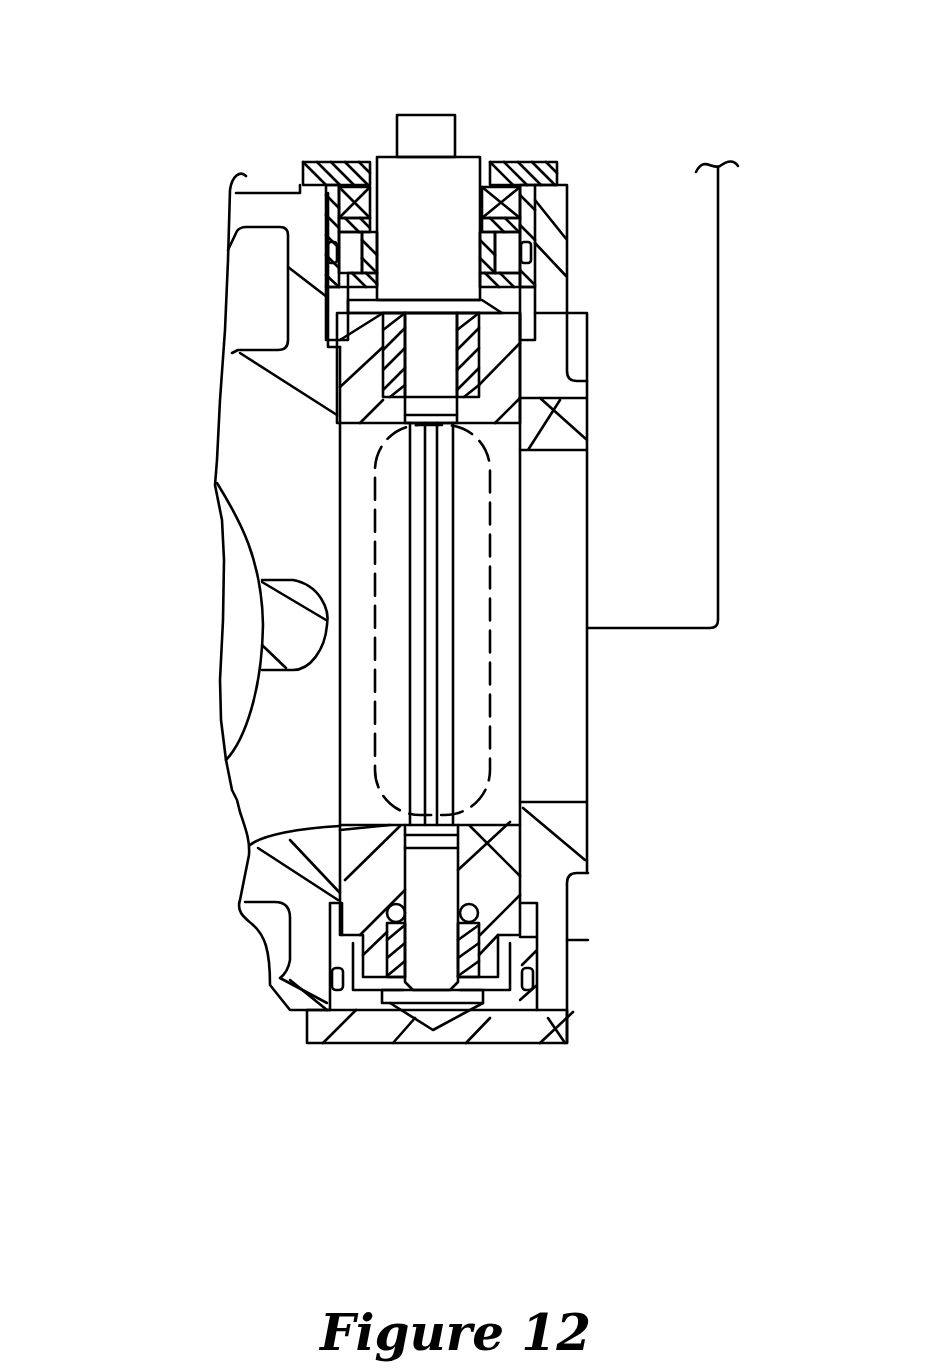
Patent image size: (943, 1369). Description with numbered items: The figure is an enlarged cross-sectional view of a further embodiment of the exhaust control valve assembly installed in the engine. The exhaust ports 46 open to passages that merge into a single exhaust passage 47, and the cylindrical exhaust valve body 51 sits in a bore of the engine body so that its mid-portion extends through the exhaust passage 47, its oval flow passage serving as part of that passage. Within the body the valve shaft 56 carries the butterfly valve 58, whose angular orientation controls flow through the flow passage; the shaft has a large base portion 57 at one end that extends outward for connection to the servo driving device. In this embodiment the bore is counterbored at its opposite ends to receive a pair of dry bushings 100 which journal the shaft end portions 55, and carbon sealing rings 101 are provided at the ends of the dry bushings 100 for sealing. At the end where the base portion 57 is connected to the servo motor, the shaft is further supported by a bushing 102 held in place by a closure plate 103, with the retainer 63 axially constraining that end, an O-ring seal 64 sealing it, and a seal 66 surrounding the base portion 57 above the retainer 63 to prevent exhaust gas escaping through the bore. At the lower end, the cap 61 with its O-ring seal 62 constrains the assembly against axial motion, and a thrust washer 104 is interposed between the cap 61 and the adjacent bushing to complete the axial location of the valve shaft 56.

The exhaust ports 46 is at (288, 500).
The exhaust passage 47 is at (560, 735).
The cylindrical exhaust valve body 51 is at (503, 503).
The valve shaft ends 55 is at (433, 980).
The valve shaft 56 is at (440, 682).
The base portion 57 is at (462, 172).
The butterfly valve 58 is at (442, 580).
The cap 61 is at (540, 1023).
The O-ring seal 62 is at (537, 980).
The retainer 63 is at (578, 175).
The O-ring seal 64 is at (533, 250).
The seal 66 is at (498, 170).
The dry bushings 100 is at (560, 362).
The carbon sealing rings 101 is at (525, 400).
The bushing 102 is at (520, 270).
The closure plate 103 is at (535, 172).
The thrust washer 104 is at (490, 960).